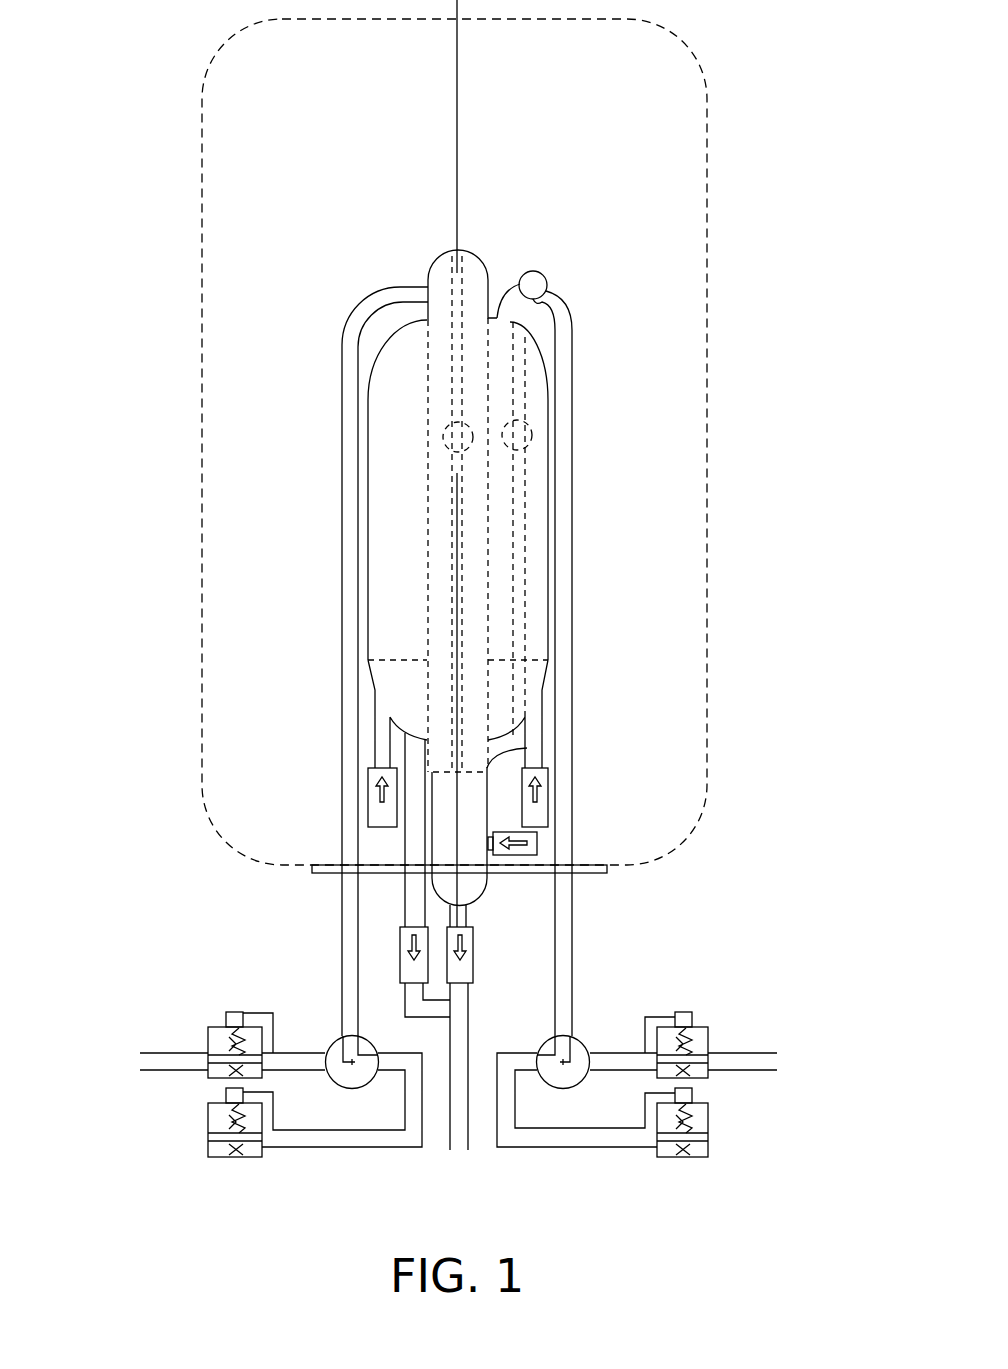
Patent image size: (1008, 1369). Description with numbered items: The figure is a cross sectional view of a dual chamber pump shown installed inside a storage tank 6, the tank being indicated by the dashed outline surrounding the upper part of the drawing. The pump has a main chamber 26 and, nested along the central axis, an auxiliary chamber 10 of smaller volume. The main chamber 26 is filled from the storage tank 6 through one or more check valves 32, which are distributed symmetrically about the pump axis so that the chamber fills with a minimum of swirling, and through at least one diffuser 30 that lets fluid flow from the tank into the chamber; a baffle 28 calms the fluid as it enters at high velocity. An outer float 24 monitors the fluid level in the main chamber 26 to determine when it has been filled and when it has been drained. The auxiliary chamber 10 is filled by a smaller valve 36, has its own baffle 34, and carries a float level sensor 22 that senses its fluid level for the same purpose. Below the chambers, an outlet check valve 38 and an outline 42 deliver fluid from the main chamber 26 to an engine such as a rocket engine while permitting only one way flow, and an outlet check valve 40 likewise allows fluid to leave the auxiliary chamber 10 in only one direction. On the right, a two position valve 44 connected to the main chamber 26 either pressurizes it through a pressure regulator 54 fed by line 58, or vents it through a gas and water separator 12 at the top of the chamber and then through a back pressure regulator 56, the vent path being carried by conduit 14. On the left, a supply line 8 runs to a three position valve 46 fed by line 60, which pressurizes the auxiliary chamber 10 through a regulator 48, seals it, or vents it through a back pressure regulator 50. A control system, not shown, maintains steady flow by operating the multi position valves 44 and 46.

The storage tank 6 is at (202, 262).
The supply line 8 is at (360, 314).
The auxiliary chamber 10 is at (432, 266).
The gas and water separator 12 is at (536, 273).
The second conduit 14 is at (565, 302).
The float level sensor 22 is at (443, 422).
The outer float 24 is at (530, 422).
The main chamber 26 is at (366, 428).
The baffle 28 is at (366, 657).
The diffuser 30 is at (375, 727).
The check valve 32 is at (368, 790).
The baffle 34 is at (527, 748).
The smaller valve 36 is at (537, 845).
The outlet check valve 38 is at (402, 933).
The outlet check valve 40 is at (473, 940).
The outline 42 is at (470, 1040).
The two position valve 44 is at (578, 1040).
The three position valve 46 is at (333, 1043).
The regulator 48 is at (233, 1012).
The back pressure regulator 50 is at (208, 1113).
The pressure regulator 54 is at (688, 1012).
The back pressure regulator 56 is at (708, 1113).
The right supply line 58 is at (768, 1053).
The left supply line 60 is at (147, 1052).